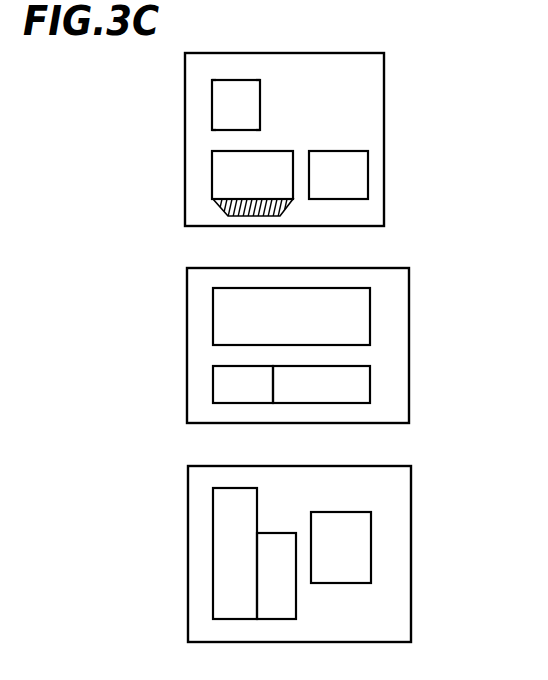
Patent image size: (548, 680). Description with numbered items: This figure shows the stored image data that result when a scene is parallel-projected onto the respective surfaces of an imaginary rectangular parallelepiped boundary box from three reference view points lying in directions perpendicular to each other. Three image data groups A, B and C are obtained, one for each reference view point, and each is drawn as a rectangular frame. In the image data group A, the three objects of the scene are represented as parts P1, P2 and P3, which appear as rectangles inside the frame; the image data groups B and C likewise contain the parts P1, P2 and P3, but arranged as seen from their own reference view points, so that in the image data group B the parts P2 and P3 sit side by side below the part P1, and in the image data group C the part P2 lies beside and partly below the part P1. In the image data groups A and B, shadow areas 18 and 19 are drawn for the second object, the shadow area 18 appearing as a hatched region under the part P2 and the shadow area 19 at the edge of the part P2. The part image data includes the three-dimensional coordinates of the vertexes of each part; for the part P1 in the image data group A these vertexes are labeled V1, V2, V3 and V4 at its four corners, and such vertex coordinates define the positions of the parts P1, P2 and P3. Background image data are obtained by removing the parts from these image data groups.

The shadow area 18 is at (226, 212).
The shadow area 19 is at (212, 388).
The part P1 is at (236, 105).
The part P2 is at (252, 175).
The part P3 is at (338, 175).
The vertex V1 is at (204, 135).
The vertex V2 is at (273, 136).
The vertex V3 is at (270, 75).
The vertex V4 is at (210, 72).
The image data group A is at (268, 146).
The image data group B is at (281, 358).
The image data group C is at (321, 554).